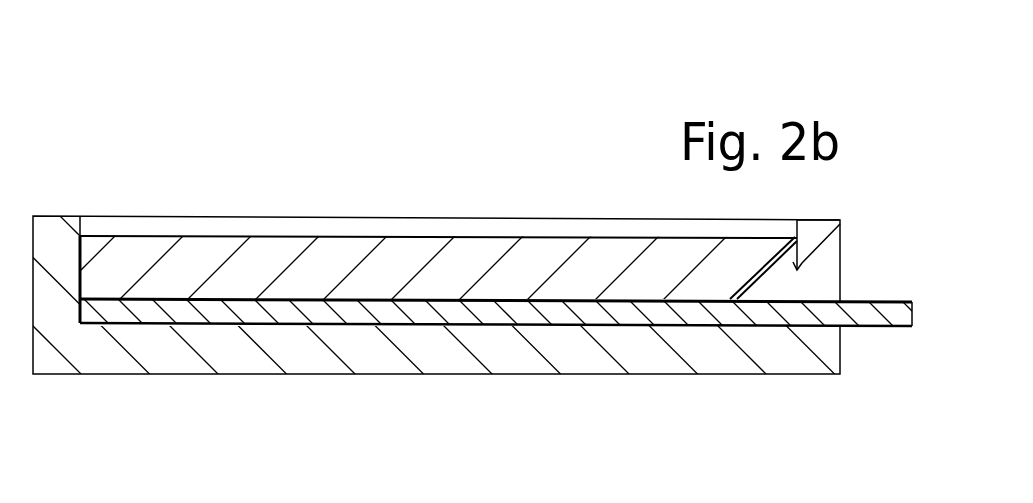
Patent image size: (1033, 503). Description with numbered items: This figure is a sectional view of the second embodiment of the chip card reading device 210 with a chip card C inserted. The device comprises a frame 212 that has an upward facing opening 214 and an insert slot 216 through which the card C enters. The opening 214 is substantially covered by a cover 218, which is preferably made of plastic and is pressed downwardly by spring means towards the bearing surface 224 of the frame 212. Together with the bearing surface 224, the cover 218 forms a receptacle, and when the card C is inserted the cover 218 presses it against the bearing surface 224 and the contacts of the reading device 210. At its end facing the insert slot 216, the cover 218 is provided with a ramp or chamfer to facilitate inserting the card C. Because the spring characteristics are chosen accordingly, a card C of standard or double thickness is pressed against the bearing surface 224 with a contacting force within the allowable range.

The chip card reading device 210 is at (175, 132).
The frame 212 is at (225, 352).
The upward facing opening 214 is at (449, 227).
The insert slot 216 is at (831, 282).
The cover 218 is at (305, 268).
The bearing surface 224 is at (385, 323).
The chip card C is at (517, 313).